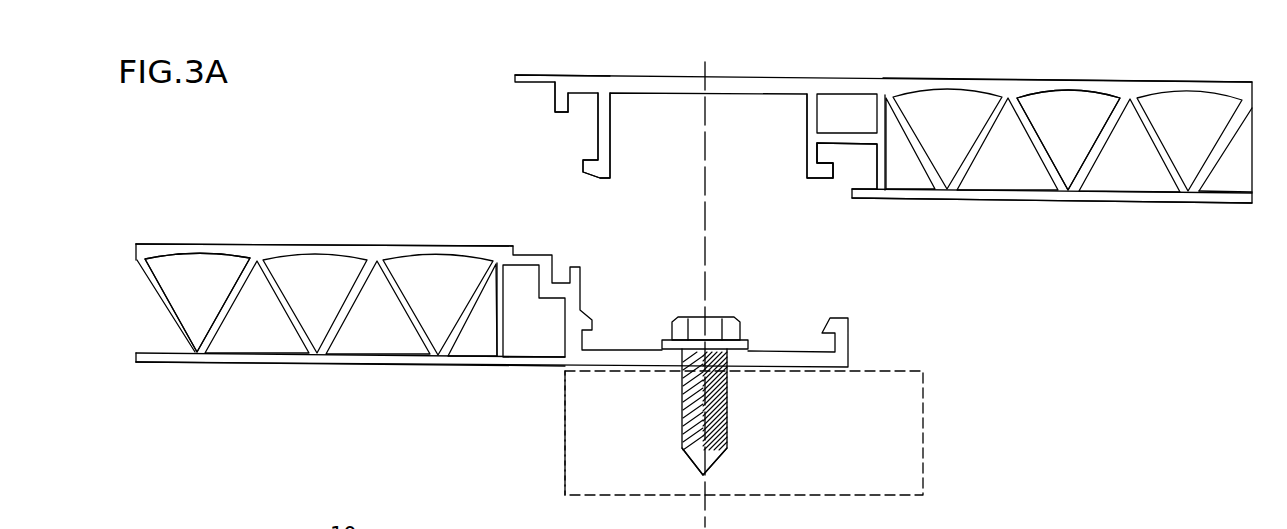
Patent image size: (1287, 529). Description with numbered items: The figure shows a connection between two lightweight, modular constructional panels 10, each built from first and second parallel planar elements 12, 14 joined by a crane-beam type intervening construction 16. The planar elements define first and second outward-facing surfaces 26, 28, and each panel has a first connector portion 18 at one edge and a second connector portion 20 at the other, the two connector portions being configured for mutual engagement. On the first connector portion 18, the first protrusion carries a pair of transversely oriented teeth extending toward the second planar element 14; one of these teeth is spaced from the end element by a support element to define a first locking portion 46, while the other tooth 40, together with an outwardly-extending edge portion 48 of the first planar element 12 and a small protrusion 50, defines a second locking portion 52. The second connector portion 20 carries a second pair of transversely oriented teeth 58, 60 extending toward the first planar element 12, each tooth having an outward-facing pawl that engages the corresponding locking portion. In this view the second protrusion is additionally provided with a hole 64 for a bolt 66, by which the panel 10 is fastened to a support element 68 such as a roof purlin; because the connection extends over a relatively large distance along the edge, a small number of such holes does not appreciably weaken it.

The constructional panel 10 is at (1042, 62).
The first planar element 12 is at (1155, 78).
The second planar element 14 is at (1170, 204).
The intervening construction 16 is at (1118, 176).
The first connector portion 18 is at (676, 62).
The second connector portion 20 is at (618, 385).
The first outward-facing surface 26 is at (989, 70).
The second outward-facing surface 28 is at (982, 209).
The tooth 40 is at (615, 148).
The first locking portion 46 is at (848, 178).
The outwardly-extending edge portion 48 is at (573, 75).
The small protrusion 50 is at (555, 104).
The second locking portion 52 is at (578, 140).
The tooth 58 is at (850, 341).
The tooth 60 is at (580, 273).
The hole 64 is at (703, 423).
The bolt 66 is at (688, 449).
The support element 68 is at (913, 425).